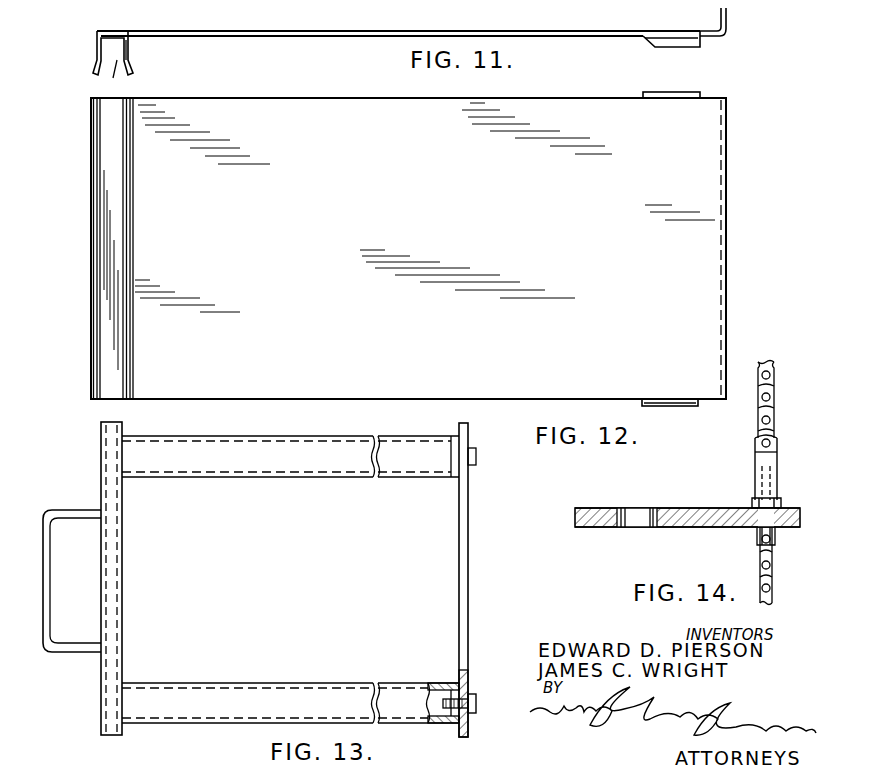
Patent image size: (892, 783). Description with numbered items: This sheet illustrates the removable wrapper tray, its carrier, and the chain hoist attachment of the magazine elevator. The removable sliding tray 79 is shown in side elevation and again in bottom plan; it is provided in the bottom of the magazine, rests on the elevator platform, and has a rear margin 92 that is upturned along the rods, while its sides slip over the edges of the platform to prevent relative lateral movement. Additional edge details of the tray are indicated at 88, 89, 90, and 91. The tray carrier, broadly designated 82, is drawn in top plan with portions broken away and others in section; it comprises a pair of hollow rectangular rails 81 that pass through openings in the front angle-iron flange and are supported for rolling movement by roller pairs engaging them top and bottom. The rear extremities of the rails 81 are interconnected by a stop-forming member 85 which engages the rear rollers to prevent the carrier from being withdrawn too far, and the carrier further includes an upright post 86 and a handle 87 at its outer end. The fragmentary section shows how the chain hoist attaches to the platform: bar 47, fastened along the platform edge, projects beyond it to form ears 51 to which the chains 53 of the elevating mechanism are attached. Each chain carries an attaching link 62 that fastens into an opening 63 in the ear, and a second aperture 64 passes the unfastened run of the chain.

In FIG. 11, the removable sliding tray 79 is at (341, 31).
In FIG. 12, the removable sliding tray 79 is at (532, 98).
In FIG. 11, the channel flange 88 is at (96, 60).
In FIG. 12, the channel flange 88 is at (94, 312).
In FIG. 11, the inner flange 89 is at (132, 66).
In FIG. 12, the inner flange 89 is at (131, 258).
In FIG. 11, the retaining lip 90 is at (113, 80).
In FIG. 12, the retaining lip 90 is at (118, 193).
In FIG. 11, the mounting tab 91 is at (686, 46).
In FIG. 12, the mounting tab 91 is at (684, 408).
In FIG. 11, the rear margin 92 is at (730, 21).
In FIG. 13, the hollow rectangular rails 81 is at (330, 470).
In FIG. 13, the carrier 82 is at (184, 603).
In FIG. 13, the stop-forming member 85 is at (470, 622).
In FIG. 13, the upright post 86 is at (114, 658).
In FIG. 13, the handle 87 is at (55, 655).
In FIG. 14, the bar 47 is at (702, 508).
In FIG. 14, the ears 51 is at (712, 527).
In FIG. 14, the chains 53 is at (763, 385).
In FIG. 14, the attaching link 62 is at (772, 470).
In FIG. 14, the opening 63 is at (776, 503).
In FIG. 14, the second aperture 64 is at (640, 508).